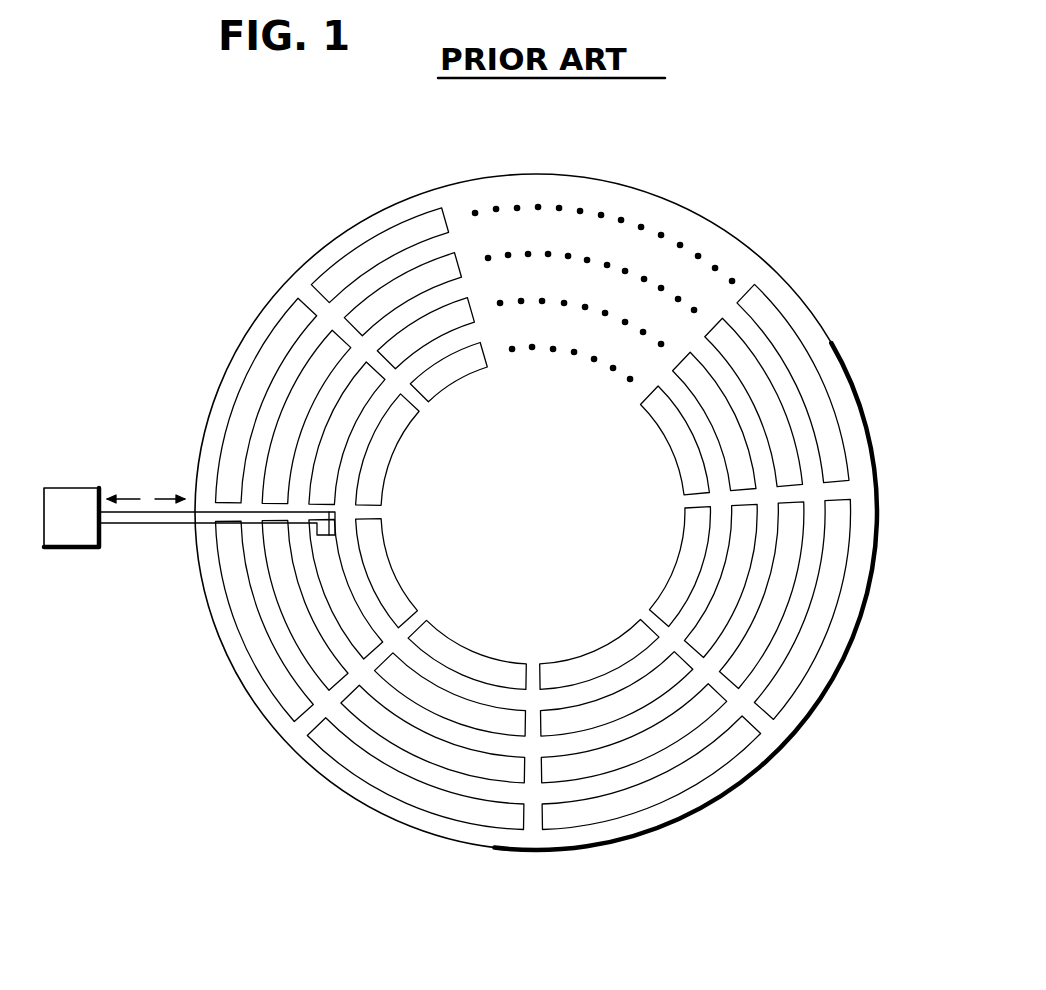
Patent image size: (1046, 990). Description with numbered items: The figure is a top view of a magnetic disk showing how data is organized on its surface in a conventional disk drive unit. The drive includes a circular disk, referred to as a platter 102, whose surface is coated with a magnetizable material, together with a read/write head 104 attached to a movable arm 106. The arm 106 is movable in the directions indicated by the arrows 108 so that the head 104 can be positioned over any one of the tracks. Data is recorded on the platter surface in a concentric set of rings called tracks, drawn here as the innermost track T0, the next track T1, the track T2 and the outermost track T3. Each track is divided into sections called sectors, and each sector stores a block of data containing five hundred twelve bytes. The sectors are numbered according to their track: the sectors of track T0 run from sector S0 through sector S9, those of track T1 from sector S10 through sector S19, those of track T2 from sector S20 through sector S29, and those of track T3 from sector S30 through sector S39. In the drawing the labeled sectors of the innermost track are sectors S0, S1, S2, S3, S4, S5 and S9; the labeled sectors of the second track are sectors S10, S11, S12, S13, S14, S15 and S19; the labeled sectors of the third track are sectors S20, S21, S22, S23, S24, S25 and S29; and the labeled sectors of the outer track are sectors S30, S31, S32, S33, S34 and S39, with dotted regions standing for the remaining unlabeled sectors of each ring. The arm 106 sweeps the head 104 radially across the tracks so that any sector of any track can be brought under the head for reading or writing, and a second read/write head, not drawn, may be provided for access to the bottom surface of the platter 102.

The platter 102 is at (672, 196).
The read/write head 104 is at (340, 532).
The movable arm 106 is at (147, 528).
The arrows 108 is at (170, 494).
The track T0 is at (442, 397).
The track T1 is at (688, 403).
The track T2 is at (295, 380).
The track T3 is at (375, 237).
The sector S0 is at (688, 573).
The sector S1 is at (630, 637).
The sector S2 is at (470, 658).
The sector S3 is at (380, 560).
The sector S4 is at (375, 487).
The sector S5 is at (450, 372).
The sector S9 is at (692, 478).
The sector S10 is at (738, 518).
The sector S11 is at (615, 698).
The sector S12 is at (407, 672).
The sector S13 is at (352, 602).
The sector S14 is at (340, 435).
The sector S15 is at (443, 327).
The sector S19 is at (725, 443).
The sector S20 is at (745, 665).
The sector S21 is at (667, 735).
The sector S22 is at (468, 765).
The sector S23 is at (308, 645).
The sector S24 is at (280, 417).
The sector S25 is at (365, 312).
The sector S29 is at (753, 378).
The sector S30 is at (805, 648).
The sector S31 is at (633, 798).
The sector S32 is at (343, 752).
The sector S33 is at (243, 613).
The sector S34 is at (437, 218).
The sector S39 is at (757, 305).